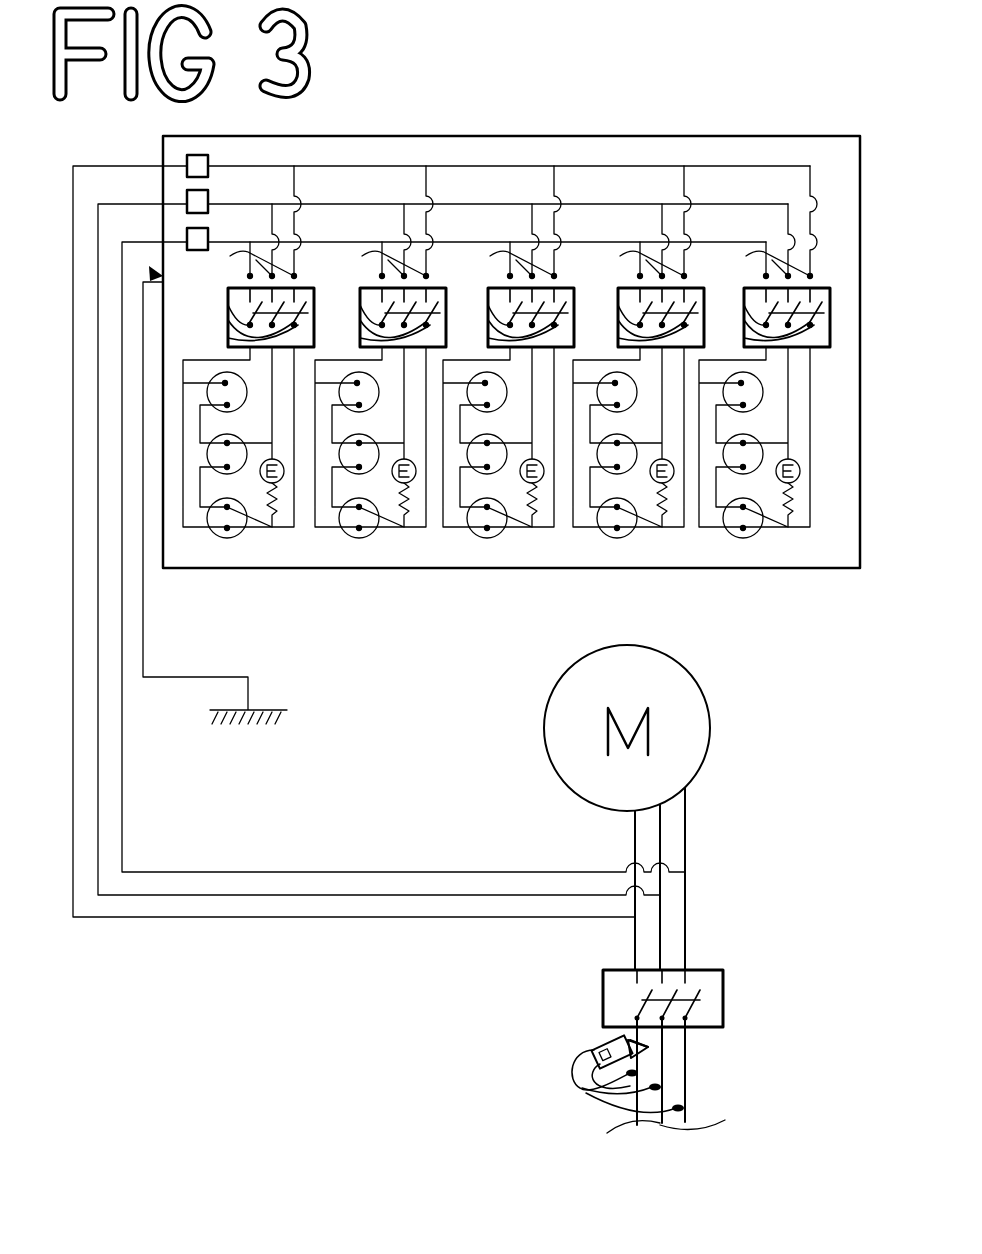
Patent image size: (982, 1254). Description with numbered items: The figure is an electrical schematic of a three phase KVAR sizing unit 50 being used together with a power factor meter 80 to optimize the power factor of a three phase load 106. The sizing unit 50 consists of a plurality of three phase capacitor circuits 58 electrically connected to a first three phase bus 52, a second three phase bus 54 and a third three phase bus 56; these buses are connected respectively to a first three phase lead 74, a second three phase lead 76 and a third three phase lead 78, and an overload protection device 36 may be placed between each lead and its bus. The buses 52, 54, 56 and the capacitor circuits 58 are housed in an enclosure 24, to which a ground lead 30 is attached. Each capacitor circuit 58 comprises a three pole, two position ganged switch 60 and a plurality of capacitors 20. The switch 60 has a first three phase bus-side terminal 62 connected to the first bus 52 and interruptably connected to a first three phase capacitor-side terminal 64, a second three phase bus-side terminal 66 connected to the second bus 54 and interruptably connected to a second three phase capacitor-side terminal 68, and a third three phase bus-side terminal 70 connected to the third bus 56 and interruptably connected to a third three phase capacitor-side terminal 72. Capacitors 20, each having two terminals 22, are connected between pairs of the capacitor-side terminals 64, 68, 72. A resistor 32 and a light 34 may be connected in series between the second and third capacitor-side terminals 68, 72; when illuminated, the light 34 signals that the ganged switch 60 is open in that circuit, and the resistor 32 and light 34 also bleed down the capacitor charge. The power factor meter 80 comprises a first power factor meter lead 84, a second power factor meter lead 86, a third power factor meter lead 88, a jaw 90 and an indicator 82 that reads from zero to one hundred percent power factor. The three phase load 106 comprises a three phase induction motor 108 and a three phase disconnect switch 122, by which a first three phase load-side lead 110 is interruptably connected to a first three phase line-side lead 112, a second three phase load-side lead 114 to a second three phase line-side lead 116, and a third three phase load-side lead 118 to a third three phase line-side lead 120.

The capacitor 20 is at (518, 465).
The terminals 22 is at (207, 515).
The enclosure 24 is at (816, 570).
The ground lead 30 is at (143, 628).
The resistor 32 is at (550, 505).
The light 34 is at (547, 471).
The overload protection device 36 is at (213, 238).
The three phase KVAR sizing unit 50 is at (511, 326).
The first three phase bus 52 is at (358, 166).
The second three phase bus 54 is at (468, 204).
The third three phase bus 56 is at (733, 242).
The three phase capacitor circuit 58 is at (549, 269).
The three pole, two position ganged switch 60 is at (834, 326).
The first three phase bus-side terminal 62 is at (481, 265).
The first three phase capacitor-side terminal 64 is at (482, 311).
The second three phase bus-side terminal 66 is at (499, 241).
The second three phase capacitor-side terminal 68 is at (504, 327).
The third three phase bus-side terminal 70 is at (516, 222).
The third three phase capacitor-side terminal 72 is at (506, 338).
The first three phase lead 74 is at (220, 918).
The second three phase lead 76 is at (305, 896).
The third three phase lead 78 is at (400, 872).
The power factor meter 80 is at (598, 1040).
The indicator 82 is at (592, 1043).
The first power factor meter lead 84 is at (572, 1070).
The second power factor meter lead 86 is at (580, 1089).
The third power factor meter lead 88 is at (682, 1108).
The jaw 90 is at (640, 1040).
The three phase load 106 is at (701, 728).
The three phase induction motor 108 is at (711, 716).
The first three phase load-side lead 110 is at (637, 827).
The first three phase line-side lead 112 is at (643, 1063).
The second three phase load-side lead 114 is at (661, 845).
The second three phase line-side lead 116 is at (668, 1038).
The third three phase load-side lead 118 is at (686, 866).
The third three phase line-side lead 120 is at (686, 1017).
The three phase disconnect switch 122 is at (724, 987).